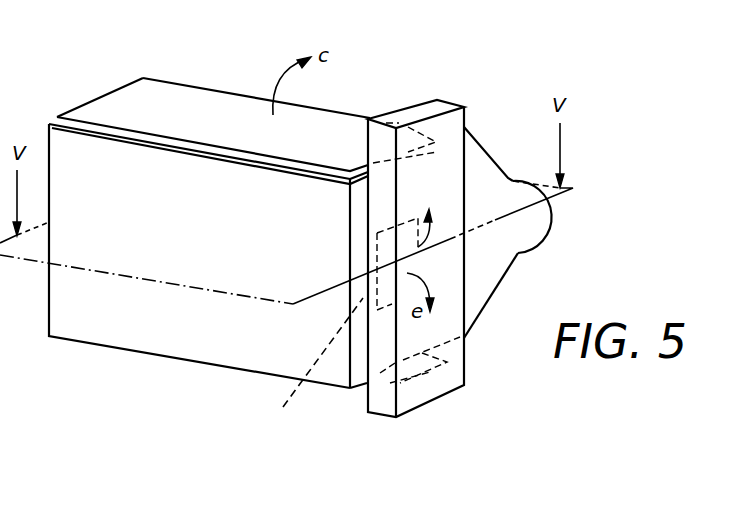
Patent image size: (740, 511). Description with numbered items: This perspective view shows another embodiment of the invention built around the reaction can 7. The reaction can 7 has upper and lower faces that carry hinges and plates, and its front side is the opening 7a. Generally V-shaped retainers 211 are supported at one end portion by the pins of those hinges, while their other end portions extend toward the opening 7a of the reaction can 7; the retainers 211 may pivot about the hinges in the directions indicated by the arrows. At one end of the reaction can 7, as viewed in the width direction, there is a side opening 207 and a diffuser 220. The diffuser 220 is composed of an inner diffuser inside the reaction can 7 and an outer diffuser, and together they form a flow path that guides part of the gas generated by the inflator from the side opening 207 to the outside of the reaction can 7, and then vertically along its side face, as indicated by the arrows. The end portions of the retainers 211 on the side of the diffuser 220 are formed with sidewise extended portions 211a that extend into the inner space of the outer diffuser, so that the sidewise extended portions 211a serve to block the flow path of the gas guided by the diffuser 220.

The retainer 211 is at (172, 97).
The sidewise extended portion 211a is at (412, 128).
The side opening 207 is at (334, 330).
The diffuser 220 is at (403, 418).
The reaction can 7 is at (183, 362).
The opening 7a is at (117, 262).